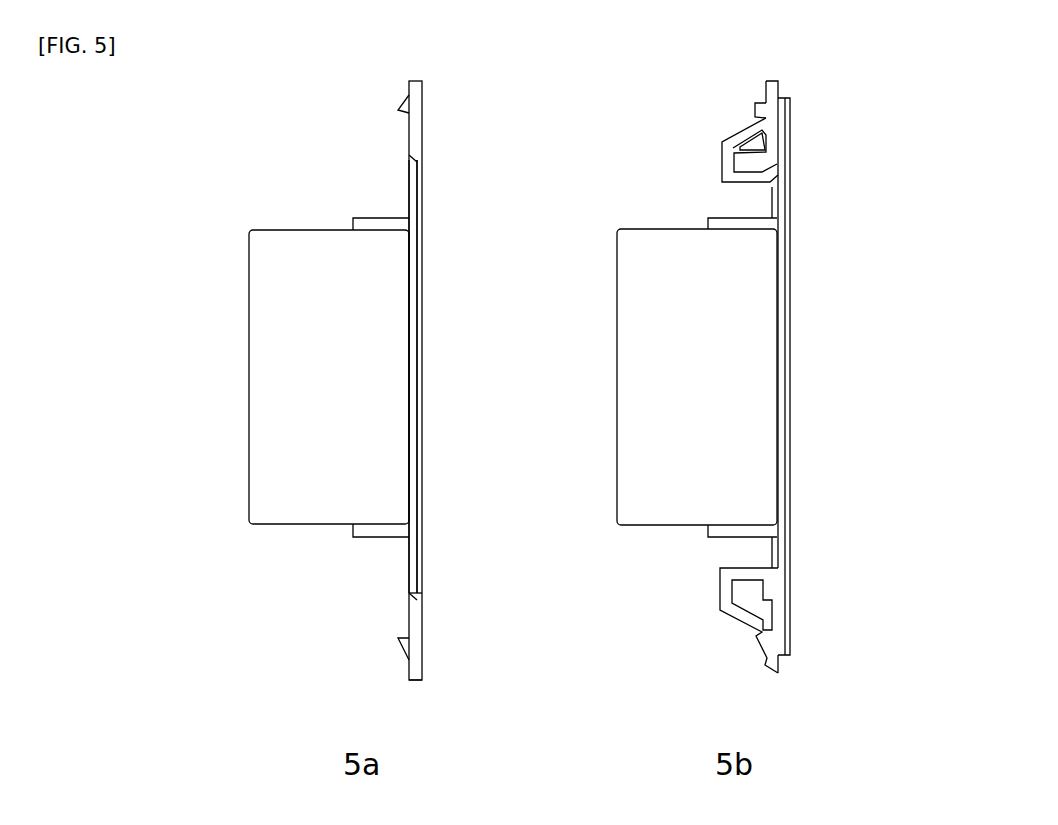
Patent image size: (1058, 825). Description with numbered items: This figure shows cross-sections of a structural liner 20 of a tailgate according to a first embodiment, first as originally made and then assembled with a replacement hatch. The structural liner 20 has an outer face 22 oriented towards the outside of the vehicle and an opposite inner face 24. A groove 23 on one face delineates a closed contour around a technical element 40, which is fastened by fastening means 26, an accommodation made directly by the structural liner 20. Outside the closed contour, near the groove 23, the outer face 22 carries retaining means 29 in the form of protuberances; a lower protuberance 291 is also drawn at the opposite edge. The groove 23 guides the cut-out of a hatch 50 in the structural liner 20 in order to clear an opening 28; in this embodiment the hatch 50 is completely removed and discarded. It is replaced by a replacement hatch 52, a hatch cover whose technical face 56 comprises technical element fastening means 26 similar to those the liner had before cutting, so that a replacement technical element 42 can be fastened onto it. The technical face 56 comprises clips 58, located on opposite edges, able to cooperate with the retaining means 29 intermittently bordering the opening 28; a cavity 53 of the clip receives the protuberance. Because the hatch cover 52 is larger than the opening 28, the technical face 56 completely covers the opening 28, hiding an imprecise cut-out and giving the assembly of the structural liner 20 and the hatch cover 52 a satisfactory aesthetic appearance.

The structural liner 20 is at (404, 661).
The outer face 22 is at (406, 612).
The groove 23 is at (414, 598).
The inner face 24 is at (424, 124).
The fastening means 26 is at (372, 216).
The opening 28 is at (754, 205).
The retaining means 29 is at (397, 109).
The technical element 40 is at (300, 332).
The replacement technical element 42 is at (705, 375).
The hatch 50 is at (418, 310).
The replacement hatch 52 is at (787, 300).
The hook cavity 53 is at (764, 153).
The technical face 56 is at (772, 548).
The clip 58 is at (745, 128).
The lower hook 291 is at (412, 650).